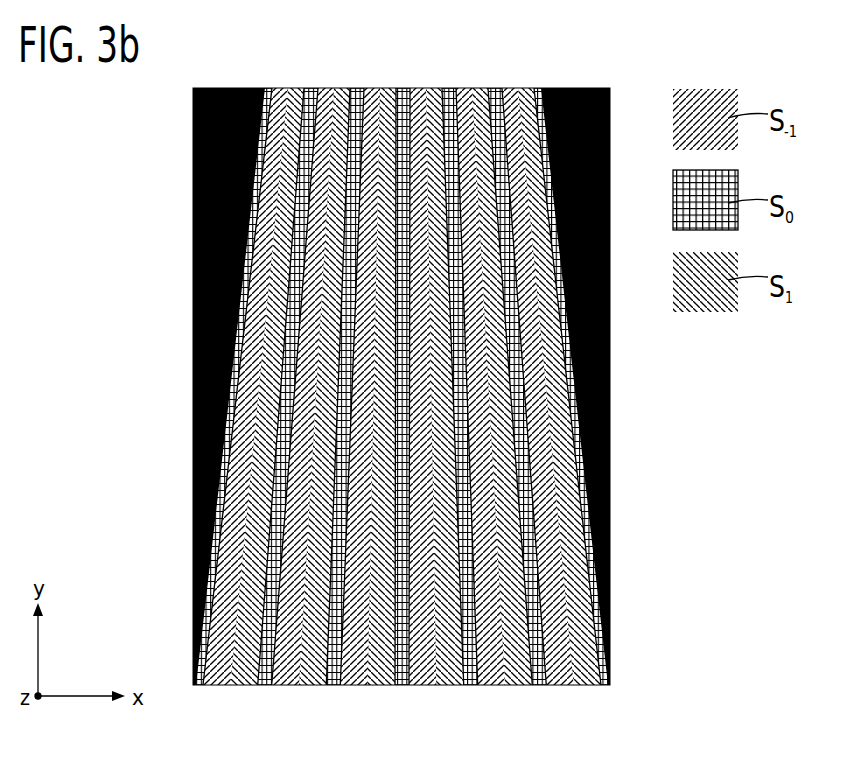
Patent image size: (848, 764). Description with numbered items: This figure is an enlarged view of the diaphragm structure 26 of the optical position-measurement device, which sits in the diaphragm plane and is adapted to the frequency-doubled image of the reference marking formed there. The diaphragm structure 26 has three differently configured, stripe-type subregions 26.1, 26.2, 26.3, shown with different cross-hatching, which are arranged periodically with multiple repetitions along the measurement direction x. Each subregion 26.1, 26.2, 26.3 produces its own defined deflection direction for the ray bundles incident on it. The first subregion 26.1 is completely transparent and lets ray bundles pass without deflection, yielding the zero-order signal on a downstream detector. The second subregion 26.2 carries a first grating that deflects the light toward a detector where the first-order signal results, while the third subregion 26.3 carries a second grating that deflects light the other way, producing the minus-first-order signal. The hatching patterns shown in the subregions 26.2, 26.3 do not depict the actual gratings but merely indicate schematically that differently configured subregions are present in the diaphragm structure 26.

The diaphragm structure 26 is at (351, 360).
The first subregion 26.1 is at (487, 92).
The second subregion 26.2 is at (427, 92).
The third subregion 26.3 is at (373, 92).